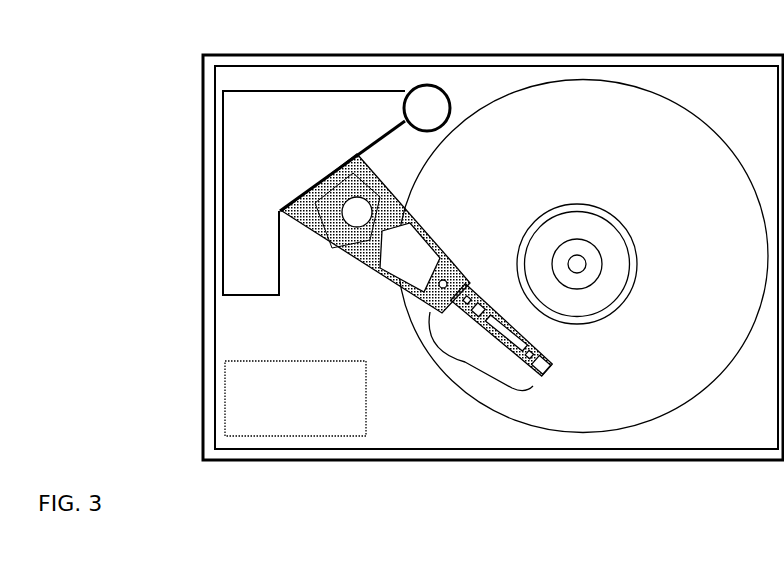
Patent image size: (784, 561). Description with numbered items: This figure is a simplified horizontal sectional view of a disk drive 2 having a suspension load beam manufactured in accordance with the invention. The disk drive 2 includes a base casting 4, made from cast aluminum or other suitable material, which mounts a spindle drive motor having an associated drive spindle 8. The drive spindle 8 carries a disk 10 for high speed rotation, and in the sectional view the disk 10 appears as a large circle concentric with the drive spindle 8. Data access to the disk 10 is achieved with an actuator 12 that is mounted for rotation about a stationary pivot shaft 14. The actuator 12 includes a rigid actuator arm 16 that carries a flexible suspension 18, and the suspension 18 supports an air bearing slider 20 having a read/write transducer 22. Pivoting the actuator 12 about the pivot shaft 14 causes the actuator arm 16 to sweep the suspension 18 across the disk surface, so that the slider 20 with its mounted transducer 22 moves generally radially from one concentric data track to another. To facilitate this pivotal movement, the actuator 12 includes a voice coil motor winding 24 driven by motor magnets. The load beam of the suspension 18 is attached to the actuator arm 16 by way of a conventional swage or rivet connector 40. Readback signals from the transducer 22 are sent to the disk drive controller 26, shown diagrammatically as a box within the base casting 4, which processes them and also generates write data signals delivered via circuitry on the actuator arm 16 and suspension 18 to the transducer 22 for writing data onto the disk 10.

The disk drive 2 is at (114, 99).
The base casting 4 is at (427, 54).
The drive spindle 8 is at (578, 264).
The disk 10 is at (688, 231).
The actuator 12 is at (343, 243).
The pivot shaft 14 is at (357, 209).
The actuator arm 16 is at (390, 278).
The suspension 18 is at (463, 363).
The air bearing slider 20 is at (566, 357).
The read/write transducer 22 is at (550, 373).
The voice coil motor winding 24 is at (365, 172).
The disk drive controller 26 is at (368, 415).
The swage or rivet connector 40 is at (444, 281).